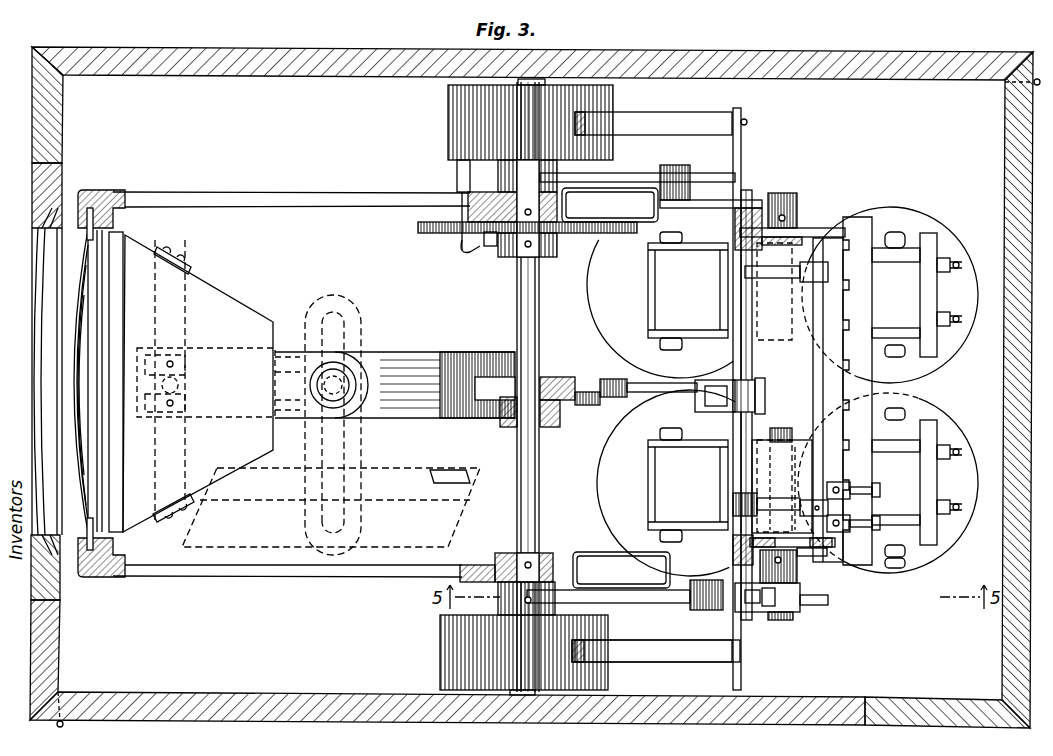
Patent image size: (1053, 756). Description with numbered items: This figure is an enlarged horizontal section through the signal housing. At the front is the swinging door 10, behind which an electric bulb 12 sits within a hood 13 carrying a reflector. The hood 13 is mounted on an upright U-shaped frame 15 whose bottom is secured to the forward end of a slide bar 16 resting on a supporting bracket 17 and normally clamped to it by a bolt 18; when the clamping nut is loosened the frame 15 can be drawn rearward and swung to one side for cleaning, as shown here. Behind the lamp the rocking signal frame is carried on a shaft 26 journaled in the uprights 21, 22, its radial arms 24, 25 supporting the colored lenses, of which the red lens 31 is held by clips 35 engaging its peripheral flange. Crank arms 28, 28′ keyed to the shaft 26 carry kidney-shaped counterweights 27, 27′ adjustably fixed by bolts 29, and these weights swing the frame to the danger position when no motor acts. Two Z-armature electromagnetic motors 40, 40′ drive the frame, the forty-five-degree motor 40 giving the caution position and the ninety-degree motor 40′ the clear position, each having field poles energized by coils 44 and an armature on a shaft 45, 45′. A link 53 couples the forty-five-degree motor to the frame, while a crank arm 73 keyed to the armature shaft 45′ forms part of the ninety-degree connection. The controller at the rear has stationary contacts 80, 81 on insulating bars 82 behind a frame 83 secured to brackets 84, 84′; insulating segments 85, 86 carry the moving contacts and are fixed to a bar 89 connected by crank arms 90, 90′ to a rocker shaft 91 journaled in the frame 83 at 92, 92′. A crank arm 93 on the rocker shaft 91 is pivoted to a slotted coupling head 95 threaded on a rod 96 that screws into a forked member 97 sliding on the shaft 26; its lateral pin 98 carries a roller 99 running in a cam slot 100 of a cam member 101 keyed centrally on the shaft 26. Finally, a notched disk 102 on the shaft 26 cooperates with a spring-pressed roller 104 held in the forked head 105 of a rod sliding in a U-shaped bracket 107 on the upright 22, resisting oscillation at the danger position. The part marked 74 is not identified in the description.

The swinging door 10 is at (38, 185).
The electric bulb 12 is at (30, 280).
The hood 13 is at (301, 391).
The upright U-shaped frame 15 is at (182, 256).
The slide bar 16 is at (345, 370).
The supporting bracket 17 is at (395, 385).
The bolt 18 is at (346, 394).
The upright 21 is at (472, 635).
The upright 22 is at (492, 105).
The radial arm 24 is at (296, 578).
The radial arm 25 is at (279, 190).
The shaft 26 is at (518, 314).
The counterweight 27 is at (611, 561).
The counterweight 27' is at (610, 233).
The crank arm 28 is at (625, 603).
The crank arm 28' is at (637, 172).
The bolt 29 is at (708, 114).
The red lens 31 is at (76, 416).
The clips 35 is at (78, 195).
The electromagnetic motor 40 is at (888, 502).
The electromagnetic motor 40' is at (890, 280).
The coils 44 is at (648, 548).
The armature shaft 45 is at (785, 416).
The armature shaft 45' is at (836, 391).
The link 53 is at (742, 612).
The crank arm 73 is at (712, 200).
The bracket collar 74 is at (783, 193).
The stationary contact 80 is at (870, 525).
The stationary contact 81 is at (870, 480).
The insulating bar 82 is at (925, 400).
The frame 83 is at (798, 230).
The bracket 84 is at (653, 667).
The bracket 84' is at (672, 111).
The segment 85 is at (812, 552).
The segment 86 is at (836, 483).
The bar 89 is at (797, 456).
The crank arm 90 is at (780, 482).
The crank arm 90' is at (780, 290).
The rocker shaft 91 is at (756, 392).
The journal 92 is at (720, 531).
The journal 92' is at (731, 229).
The crank arm 93 is at (760, 388).
The slotted coupling head 95 is at (714, 396).
The rod 96 is at (658, 392).
The forked member 97 is at (552, 377).
The lateral pin 98 is at (518, 424).
The roller 99 is at (556, 410).
The cam slot 100 is at (610, 379).
The cam member 101 is at (586, 406).
The disk 102 is at (435, 234).
The spring-pressed roller 104 is at (464, 252).
The forked head 105 is at (490, 250).
The U-shaped bracket 107 is at (456, 168).